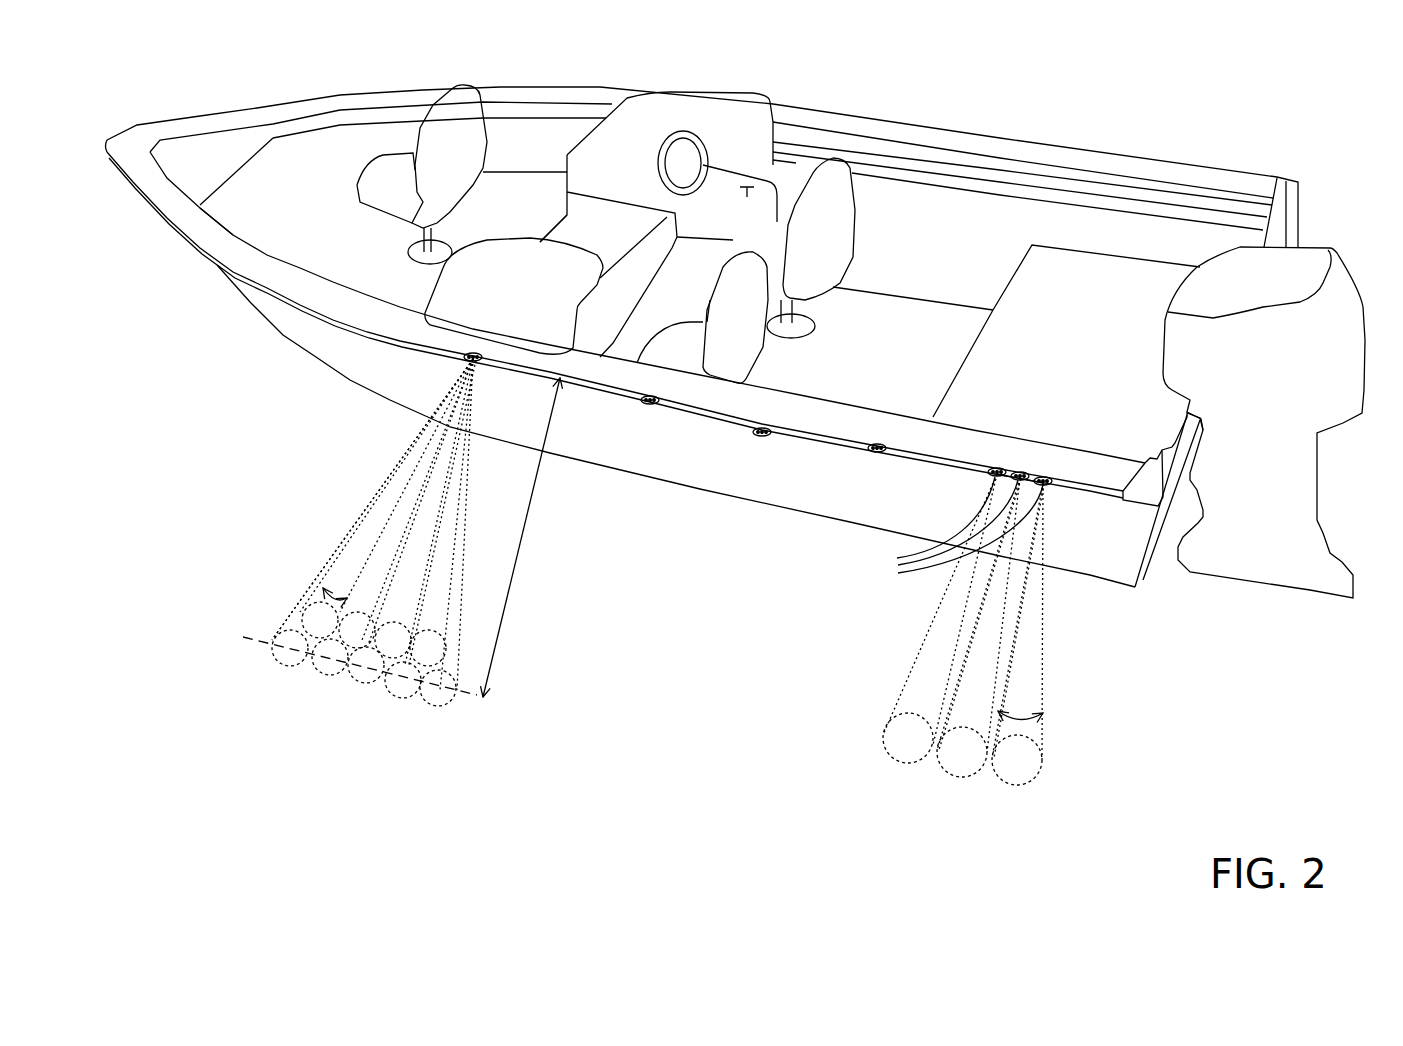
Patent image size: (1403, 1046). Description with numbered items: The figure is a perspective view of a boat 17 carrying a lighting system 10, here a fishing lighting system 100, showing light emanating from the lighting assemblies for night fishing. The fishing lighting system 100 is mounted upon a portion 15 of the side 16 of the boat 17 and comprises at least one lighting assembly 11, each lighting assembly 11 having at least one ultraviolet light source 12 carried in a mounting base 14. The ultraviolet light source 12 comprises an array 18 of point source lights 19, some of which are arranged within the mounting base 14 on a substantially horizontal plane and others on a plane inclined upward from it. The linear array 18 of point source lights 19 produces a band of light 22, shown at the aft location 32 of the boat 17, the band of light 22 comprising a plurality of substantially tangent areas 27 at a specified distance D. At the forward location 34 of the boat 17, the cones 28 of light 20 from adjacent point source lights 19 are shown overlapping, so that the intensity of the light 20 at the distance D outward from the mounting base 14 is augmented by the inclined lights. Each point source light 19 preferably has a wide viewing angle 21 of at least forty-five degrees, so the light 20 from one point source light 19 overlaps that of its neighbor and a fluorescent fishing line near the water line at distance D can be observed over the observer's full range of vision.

The lighting system 10 is at (682, 687).
The lighting assembly 11 is at (440, 358).
The ultraviolet light source 12 is at (650, 407).
The mounting base 14 is at (474, 352).
The portion of the side 15 is at (455, 353).
The side 16 is at (977, 133).
The boat 17 is at (1147, 233).
The array 18 is at (877, 613).
The point source lights 19 is at (951, 532).
The light 20 is at (390, 643).
The wide viewing angle 21 is at (343, 595).
The band of light 22 is at (455, 755).
The substantially tangent areas 27 is at (363, 683).
The cone 28 is at (443, 547).
The aft location 32 is at (1143, 675).
The forward location 34 is at (290, 448).
The fishing lighting system 100 is at (328, 812).
The distance D is at (521, 537).